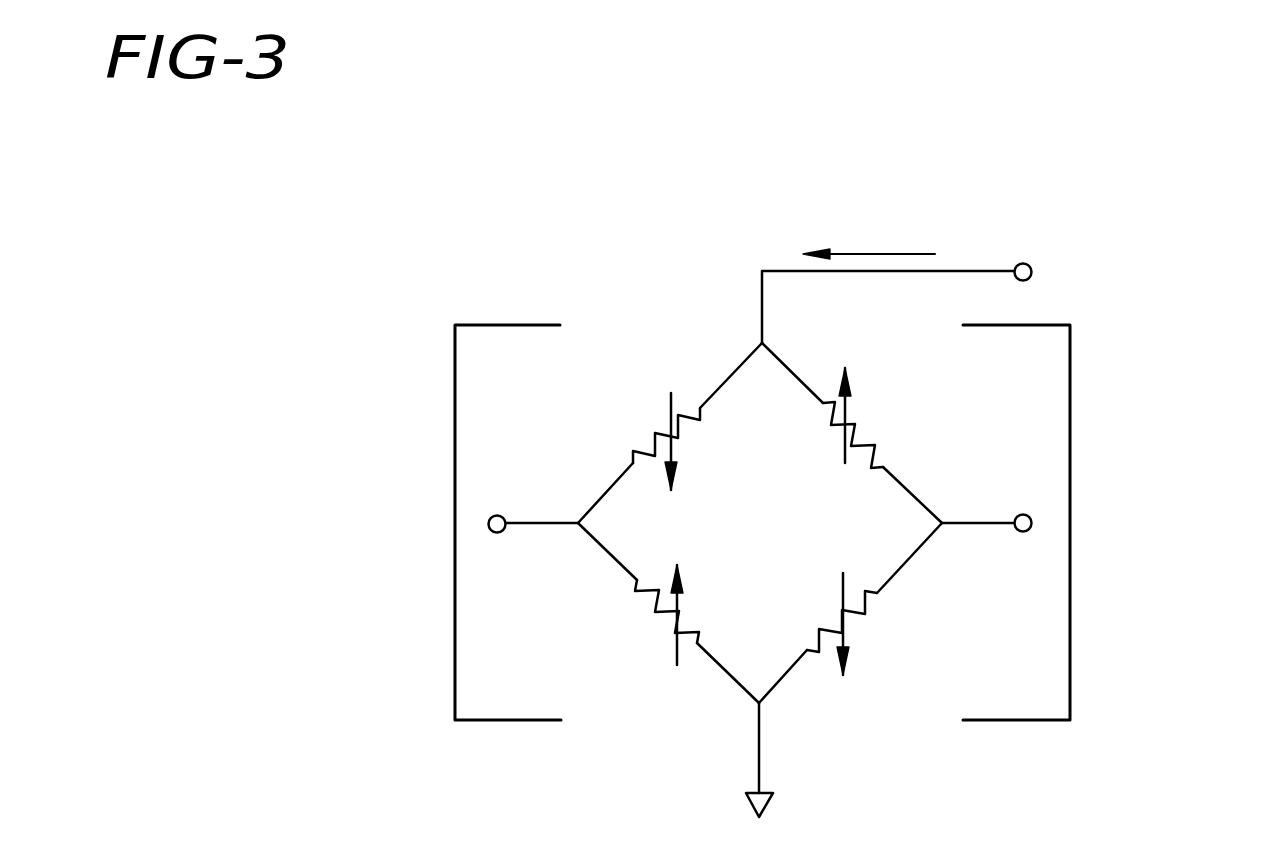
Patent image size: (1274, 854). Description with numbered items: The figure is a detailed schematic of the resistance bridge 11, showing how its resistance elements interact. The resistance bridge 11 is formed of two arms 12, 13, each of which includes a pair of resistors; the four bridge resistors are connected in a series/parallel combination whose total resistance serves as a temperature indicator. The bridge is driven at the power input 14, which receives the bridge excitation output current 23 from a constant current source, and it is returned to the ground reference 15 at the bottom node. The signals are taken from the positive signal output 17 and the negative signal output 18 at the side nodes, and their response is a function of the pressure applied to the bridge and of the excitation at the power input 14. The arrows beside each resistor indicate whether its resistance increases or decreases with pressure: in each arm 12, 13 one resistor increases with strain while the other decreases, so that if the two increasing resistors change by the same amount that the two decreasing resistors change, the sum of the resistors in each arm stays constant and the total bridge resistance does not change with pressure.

The resistance bridge 11 is at (697, 212).
The arm 12 is at (472, 325).
The arm 13 is at (1070, 455).
The power input 14 is at (763, 343).
The ground reference 15 is at (760, 756).
The positive signal output 17 is at (548, 527).
The negative signal output 18 is at (990, 525).
The bridge excitation output current 23 is at (869, 233).